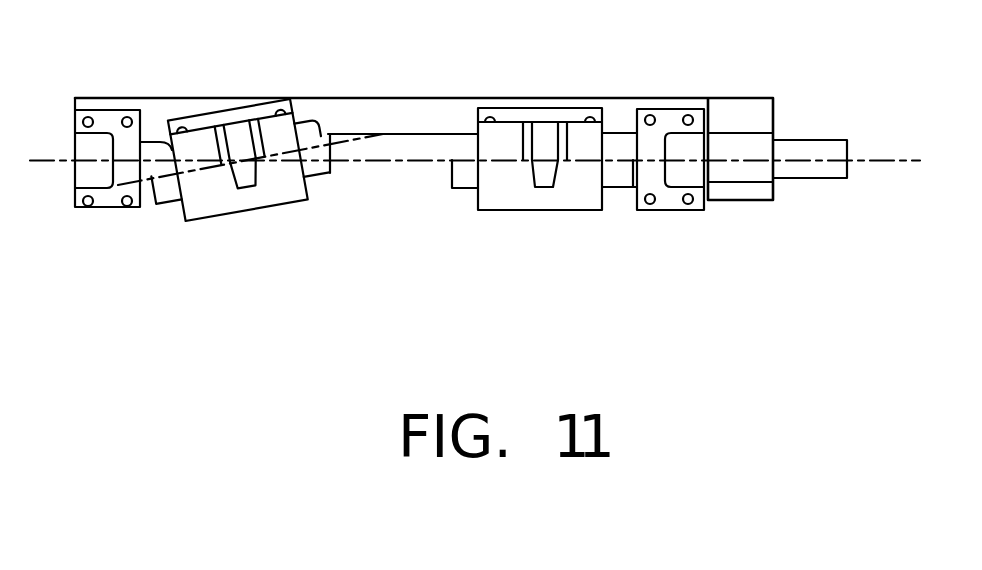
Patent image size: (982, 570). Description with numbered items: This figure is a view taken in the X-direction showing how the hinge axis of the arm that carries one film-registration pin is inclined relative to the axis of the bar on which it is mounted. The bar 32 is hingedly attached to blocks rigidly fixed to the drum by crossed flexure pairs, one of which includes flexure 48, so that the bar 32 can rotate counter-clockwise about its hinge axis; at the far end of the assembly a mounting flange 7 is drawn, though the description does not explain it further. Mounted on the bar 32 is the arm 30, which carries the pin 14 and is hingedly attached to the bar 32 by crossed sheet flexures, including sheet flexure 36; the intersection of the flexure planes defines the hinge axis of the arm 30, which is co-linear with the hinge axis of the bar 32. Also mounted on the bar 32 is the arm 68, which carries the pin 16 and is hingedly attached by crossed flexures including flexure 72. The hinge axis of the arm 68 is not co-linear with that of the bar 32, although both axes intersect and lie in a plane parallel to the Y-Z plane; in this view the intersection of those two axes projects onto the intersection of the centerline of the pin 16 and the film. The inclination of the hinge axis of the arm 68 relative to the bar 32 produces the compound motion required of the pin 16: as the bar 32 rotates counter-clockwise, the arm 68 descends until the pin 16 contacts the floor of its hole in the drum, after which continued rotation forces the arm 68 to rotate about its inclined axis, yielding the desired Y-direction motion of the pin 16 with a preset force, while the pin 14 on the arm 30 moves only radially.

The mounting flange 7 is at (672, 203).
The pin 14 is at (547, 187).
The pin 16 is at (245, 180).
The arm 30 is at (522, 205).
The bar 32 is at (165, 105).
The sheet flexure 36 is at (567, 113).
The flexure 48 is at (105, 113).
The arm 68 is at (207, 217).
The flexure 72 is at (260, 105).